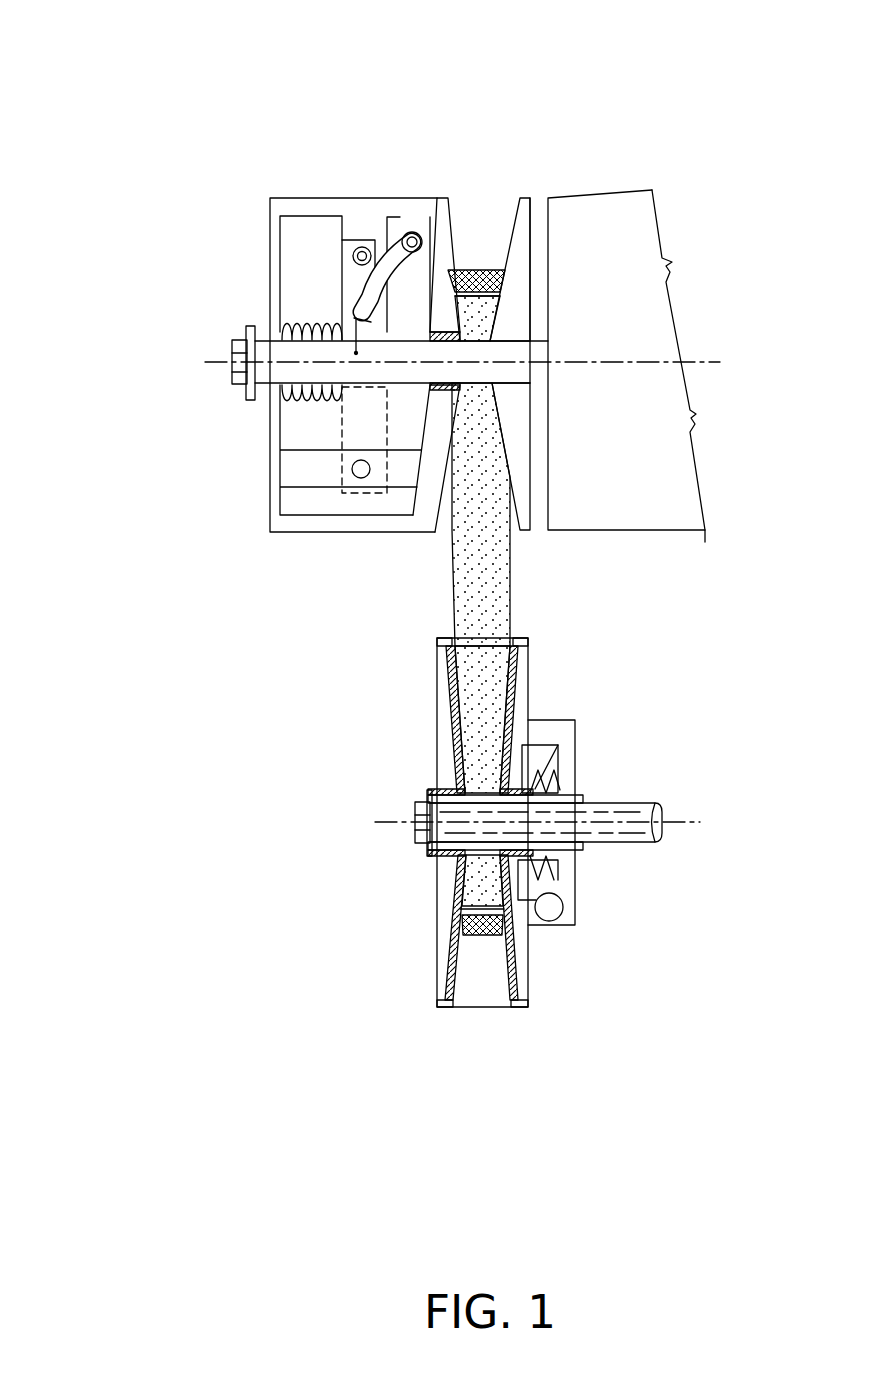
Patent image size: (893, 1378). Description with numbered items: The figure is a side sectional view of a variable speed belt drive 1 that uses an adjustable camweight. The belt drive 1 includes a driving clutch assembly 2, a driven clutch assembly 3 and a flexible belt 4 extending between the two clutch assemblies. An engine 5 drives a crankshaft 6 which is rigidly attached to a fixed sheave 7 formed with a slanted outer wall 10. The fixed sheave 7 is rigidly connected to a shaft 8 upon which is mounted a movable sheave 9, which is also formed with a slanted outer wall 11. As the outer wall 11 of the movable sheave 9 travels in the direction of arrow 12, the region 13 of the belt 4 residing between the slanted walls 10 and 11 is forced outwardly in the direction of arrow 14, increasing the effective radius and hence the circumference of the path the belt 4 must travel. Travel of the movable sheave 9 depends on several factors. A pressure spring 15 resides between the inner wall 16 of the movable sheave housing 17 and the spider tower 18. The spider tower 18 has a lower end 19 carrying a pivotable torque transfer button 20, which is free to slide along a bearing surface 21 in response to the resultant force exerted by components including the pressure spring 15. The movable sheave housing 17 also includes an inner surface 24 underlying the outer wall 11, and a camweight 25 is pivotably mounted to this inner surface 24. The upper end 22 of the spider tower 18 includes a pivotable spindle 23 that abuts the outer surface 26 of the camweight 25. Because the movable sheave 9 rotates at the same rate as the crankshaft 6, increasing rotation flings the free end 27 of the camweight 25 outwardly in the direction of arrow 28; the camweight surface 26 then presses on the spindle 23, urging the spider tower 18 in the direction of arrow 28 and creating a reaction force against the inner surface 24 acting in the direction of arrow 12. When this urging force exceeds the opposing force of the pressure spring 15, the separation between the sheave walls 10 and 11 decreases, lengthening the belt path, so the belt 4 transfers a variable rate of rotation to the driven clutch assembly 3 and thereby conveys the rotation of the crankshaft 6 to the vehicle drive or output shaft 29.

The variable speed belt drive 1 is at (151, 863).
The driving clutch assembly 2 is at (353, 104).
The driven clutch assembly 3 is at (612, 666).
The flexible belt 4 is at (493, 585).
The engine 5 is at (640, 233).
The crankshaft 6 is at (540, 353).
The fixed sheave 7 is at (522, 222).
The shaft 8 is at (265, 373).
The movable sheave 9 is at (428, 515).
The slanted outer wall 10 is at (503, 247).
The slanted outer wall 11 is at (447, 212).
The arrow 12 is at (252, 97).
The region of belt 13 is at (475, 285).
The arrow 14 is at (497, 100).
The pressure spring 15 is at (297, 407).
The inner wall 16 is at (286, 240).
The movable sheave housing 17 is at (280, 524).
The spider tower 18 is at (378, 332).
The lower end 19 is at (337, 500).
The torque transfer button 20 is at (362, 460).
The bearing surface 21 is at (300, 467).
The upper end 22 is at (343, 241).
The pivotable spindle 23 is at (354, 246).
The inner surface 24 is at (406, 262).
The camweight 25 is at (363, 295).
The outer surface 26 is at (389, 217).
The free end 27 is at (381, 340).
The arrow 28 is at (235, 288).
The output shaft 29 is at (652, 830).